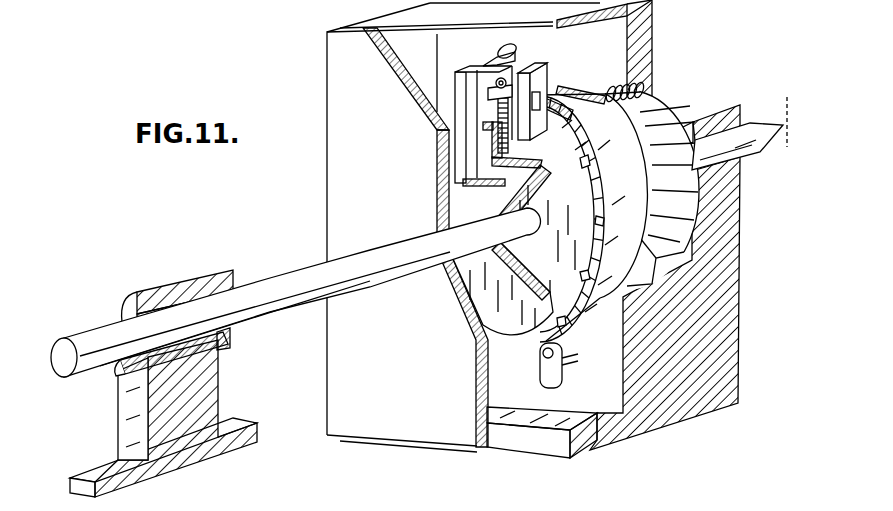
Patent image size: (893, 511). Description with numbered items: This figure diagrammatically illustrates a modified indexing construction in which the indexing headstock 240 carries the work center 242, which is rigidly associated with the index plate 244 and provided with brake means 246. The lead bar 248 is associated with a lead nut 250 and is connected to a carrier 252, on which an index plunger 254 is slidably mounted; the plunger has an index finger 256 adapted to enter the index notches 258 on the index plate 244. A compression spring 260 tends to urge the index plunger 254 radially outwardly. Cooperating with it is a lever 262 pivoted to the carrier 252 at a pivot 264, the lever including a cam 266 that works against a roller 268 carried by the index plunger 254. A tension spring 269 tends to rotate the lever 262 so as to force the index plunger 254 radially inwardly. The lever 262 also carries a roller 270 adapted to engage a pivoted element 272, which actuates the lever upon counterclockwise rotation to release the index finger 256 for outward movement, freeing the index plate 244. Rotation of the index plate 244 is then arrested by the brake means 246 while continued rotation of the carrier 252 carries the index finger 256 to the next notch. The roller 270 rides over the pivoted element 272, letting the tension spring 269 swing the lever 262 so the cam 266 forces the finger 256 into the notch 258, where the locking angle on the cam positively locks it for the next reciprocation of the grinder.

The indexing headstock 240 is at (733, 332).
The work center 242 is at (668, 123).
The index plate 244 is at (608, 200).
The brake means 246 is at (614, 88).
The lead bar 248 is at (301, 281).
The lead nut 250 is at (185, 284).
The carrier 252 is at (500, 320).
The index plunger 254 is at (530, 72).
The index finger 256 is at (568, 115).
The index notches 258 is at (582, 167).
The compression spring 260 is at (514, 158).
The lever 262 is at (460, 108).
The pivot 264 is at (442, 162).
The cam 266 is at (496, 70).
The roller 268 is at (495, 83).
The tension spring 269 is at (414, 190).
The roller 270 is at (507, 45).
The pivoted element 272 is at (540, 381).